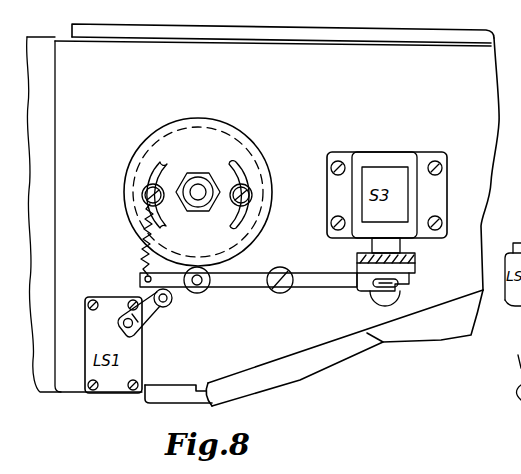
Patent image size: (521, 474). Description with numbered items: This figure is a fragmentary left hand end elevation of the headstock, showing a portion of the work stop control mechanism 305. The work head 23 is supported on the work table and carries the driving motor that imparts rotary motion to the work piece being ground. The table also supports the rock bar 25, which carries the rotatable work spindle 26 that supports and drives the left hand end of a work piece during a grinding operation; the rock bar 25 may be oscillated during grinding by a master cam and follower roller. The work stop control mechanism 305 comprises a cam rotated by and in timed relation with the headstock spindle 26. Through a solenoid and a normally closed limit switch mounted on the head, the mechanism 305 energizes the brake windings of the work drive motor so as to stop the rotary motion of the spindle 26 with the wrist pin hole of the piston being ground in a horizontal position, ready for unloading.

The work head 23 is at (113, 0).
The rock bar 25 is at (501, 164).
The work spindle 26 is at (197, 190).
The work stop control mechanism 305 is at (241, 128).